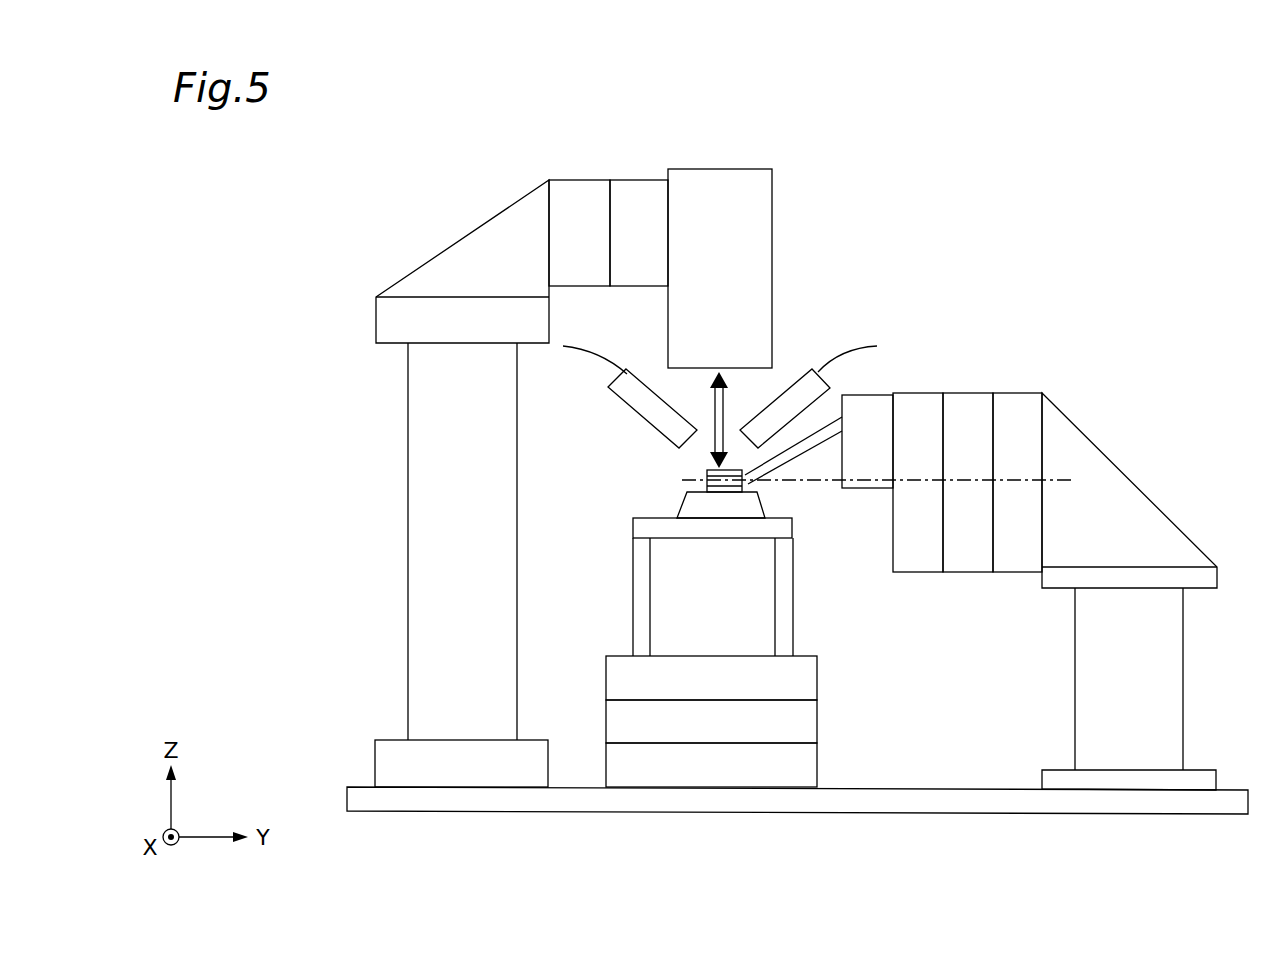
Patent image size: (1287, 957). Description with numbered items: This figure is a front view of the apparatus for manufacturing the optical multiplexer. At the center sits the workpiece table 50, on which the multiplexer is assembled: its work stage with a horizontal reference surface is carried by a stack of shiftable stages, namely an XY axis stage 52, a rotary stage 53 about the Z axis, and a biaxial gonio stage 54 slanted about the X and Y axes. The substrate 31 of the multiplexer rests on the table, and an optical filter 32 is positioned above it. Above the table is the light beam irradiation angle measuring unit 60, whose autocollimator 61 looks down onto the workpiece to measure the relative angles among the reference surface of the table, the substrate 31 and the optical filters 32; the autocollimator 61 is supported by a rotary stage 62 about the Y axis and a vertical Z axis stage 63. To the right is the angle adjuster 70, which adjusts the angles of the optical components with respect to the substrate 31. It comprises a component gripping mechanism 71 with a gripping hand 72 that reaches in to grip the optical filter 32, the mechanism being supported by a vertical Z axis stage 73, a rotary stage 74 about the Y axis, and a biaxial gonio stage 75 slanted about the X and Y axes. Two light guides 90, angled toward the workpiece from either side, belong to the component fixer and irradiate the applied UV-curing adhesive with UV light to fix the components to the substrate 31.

The light beam irradiation angle measuring unit 60 is at (458, 176).
The autocollimator 61 is at (752, 223).
The rotary stage 62 is at (634, 180).
The Z axis stage 63 is at (577, 180).
The light guide 90 is at (647, 406).
The optical filters 32 is at (712, 473).
The substrate 31 is at (693, 505).
The workpiece table 50 is at (637, 528).
The XY axis stage 52 is at (711, 765).
The rotary stage 53 is at (711, 721).
The biaxial gonio stage 54 is at (711, 678).
The angle adjuster 70 is at (1142, 420).
The component gripping mechanism 71 is at (868, 490).
The gripping hand 72 is at (758, 482).
The Z axis stage 73 is at (1017, 393).
The rotary stage 74 is at (967, 393).
The biaxial gonio stage 75 is at (917, 393).